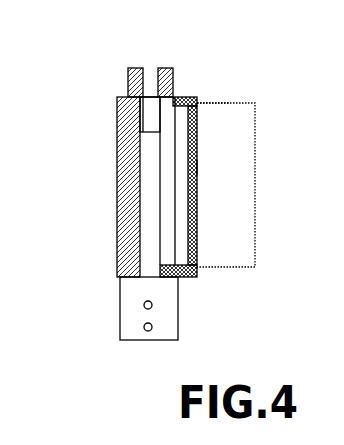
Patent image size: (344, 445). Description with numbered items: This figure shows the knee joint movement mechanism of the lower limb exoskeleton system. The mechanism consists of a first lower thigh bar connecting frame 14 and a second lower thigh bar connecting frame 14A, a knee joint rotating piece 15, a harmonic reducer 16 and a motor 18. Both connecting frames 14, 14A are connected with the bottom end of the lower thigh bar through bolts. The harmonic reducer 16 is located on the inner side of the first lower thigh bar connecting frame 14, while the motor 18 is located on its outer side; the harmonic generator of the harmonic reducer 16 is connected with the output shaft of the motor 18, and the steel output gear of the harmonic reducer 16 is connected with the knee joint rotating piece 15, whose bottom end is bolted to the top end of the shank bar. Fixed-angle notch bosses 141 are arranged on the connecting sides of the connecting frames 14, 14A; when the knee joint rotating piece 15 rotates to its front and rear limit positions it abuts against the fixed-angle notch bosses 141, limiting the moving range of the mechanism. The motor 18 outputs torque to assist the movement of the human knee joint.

The first lower thigh bar connecting frame 14 is at (182, 100).
The second lower thigh bar connecting frame 14A is at (117, 137).
The fixed-angle notch boss 141 is at (143, 97).
The knee joint rotating piece 15 is at (197, 103).
The harmonic reducer 16 is at (197, 167).
The motor 18 is at (237, 253).